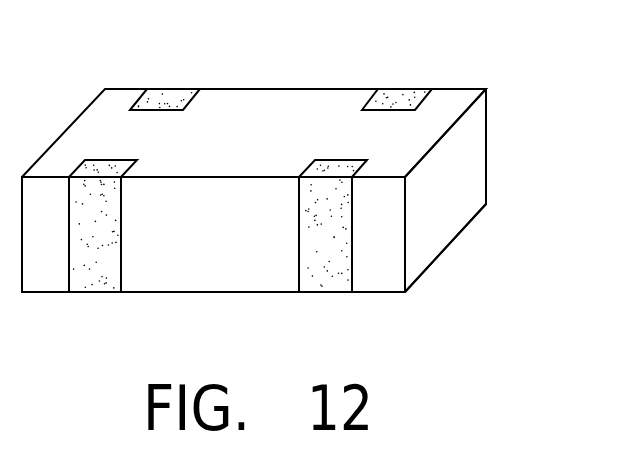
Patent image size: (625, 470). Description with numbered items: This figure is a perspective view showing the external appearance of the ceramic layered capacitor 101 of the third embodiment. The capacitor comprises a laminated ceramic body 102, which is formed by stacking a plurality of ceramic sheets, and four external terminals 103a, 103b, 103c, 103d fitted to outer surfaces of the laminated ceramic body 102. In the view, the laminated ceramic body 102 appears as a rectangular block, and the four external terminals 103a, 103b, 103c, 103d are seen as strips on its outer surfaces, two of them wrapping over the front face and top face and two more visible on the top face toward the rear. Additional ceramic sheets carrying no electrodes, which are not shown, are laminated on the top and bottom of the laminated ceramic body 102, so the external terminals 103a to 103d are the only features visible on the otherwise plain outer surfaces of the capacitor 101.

The ceramic layered capacitor 101 is at (315, 73).
The laminated ceramic body 102 is at (456, 176).
The external terminal 103a is at (177, 92).
The external terminal 103b is at (97, 272).
The external terminal 103c is at (408, 93).
The external terminal 103d is at (327, 275).